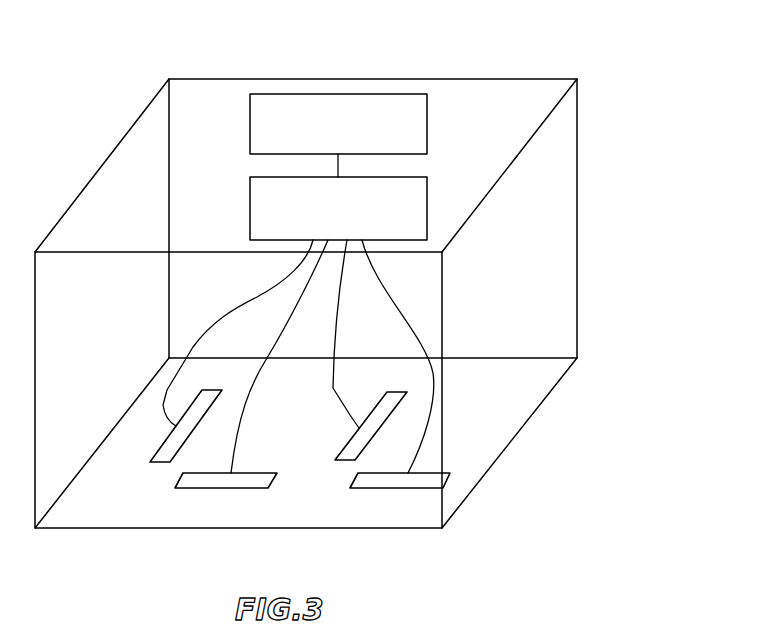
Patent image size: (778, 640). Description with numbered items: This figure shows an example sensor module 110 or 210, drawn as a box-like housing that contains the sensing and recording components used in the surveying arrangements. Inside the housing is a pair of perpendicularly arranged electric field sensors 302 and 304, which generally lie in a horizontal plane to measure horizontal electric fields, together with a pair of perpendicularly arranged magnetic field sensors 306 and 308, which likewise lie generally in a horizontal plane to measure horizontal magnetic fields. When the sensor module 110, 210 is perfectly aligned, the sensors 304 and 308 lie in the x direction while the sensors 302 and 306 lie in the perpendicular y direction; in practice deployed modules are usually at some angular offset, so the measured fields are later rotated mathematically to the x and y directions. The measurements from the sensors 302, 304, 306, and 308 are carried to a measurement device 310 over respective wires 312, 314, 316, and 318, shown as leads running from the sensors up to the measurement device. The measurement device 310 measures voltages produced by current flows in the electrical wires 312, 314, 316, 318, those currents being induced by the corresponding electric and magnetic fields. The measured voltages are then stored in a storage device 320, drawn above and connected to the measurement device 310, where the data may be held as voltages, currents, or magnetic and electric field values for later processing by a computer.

The sensor module 110 is at (381, 273).
The sensor module 210 is at (597, 89).
The electric field sensor 302 is at (163, 437).
The electric field sensor 304 is at (257, 488).
The magnetic field sensor 306 is at (356, 434).
The magnetic field sensor 308 is at (447, 477).
The measurement device 310 is at (250, 197).
The wire 312 is at (165, 391).
The wire 314 is at (238, 433).
The wire 316 is at (347, 413).
The wire 318 is at (395, 320).
The storage device 320 is at (428, 128).